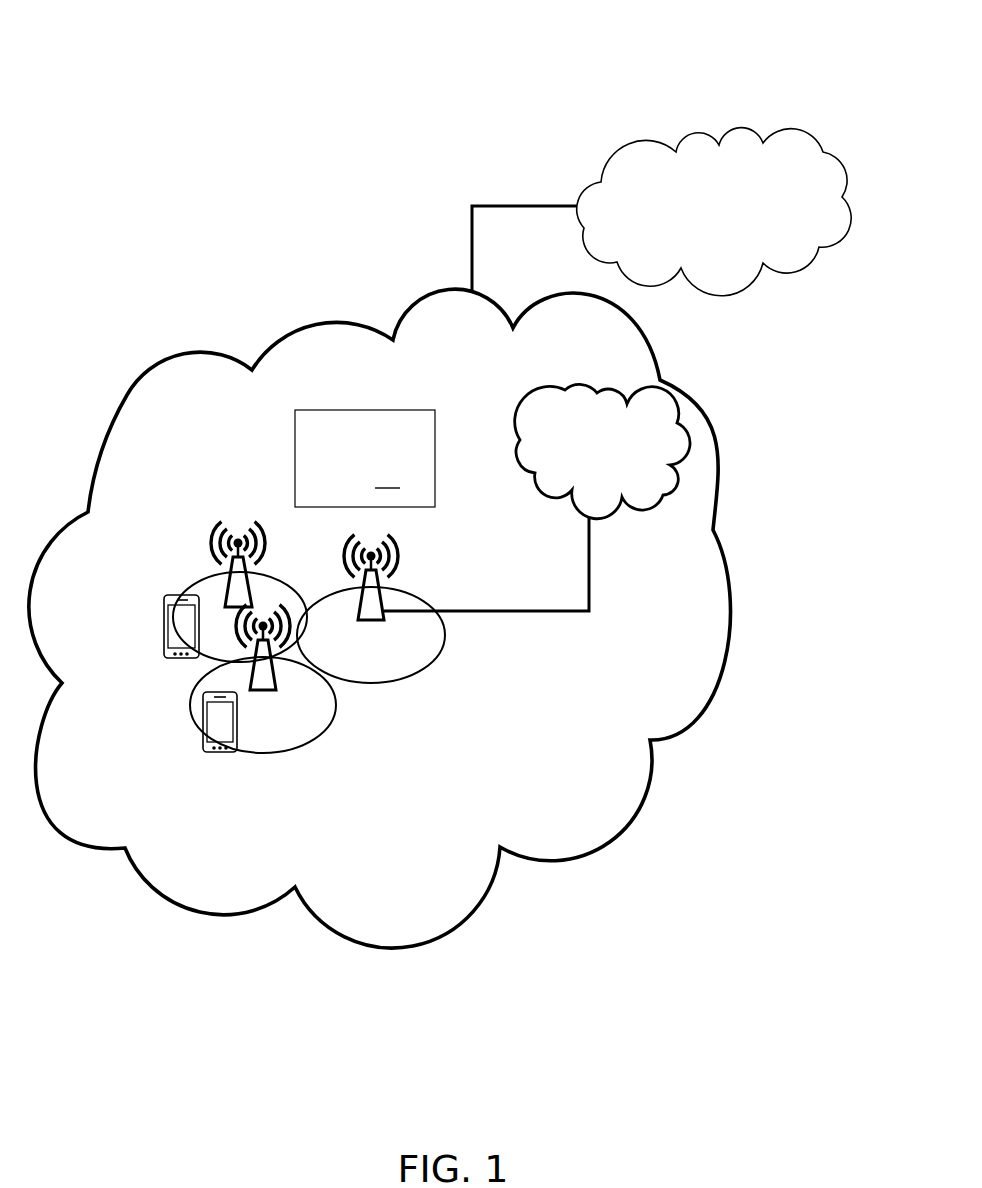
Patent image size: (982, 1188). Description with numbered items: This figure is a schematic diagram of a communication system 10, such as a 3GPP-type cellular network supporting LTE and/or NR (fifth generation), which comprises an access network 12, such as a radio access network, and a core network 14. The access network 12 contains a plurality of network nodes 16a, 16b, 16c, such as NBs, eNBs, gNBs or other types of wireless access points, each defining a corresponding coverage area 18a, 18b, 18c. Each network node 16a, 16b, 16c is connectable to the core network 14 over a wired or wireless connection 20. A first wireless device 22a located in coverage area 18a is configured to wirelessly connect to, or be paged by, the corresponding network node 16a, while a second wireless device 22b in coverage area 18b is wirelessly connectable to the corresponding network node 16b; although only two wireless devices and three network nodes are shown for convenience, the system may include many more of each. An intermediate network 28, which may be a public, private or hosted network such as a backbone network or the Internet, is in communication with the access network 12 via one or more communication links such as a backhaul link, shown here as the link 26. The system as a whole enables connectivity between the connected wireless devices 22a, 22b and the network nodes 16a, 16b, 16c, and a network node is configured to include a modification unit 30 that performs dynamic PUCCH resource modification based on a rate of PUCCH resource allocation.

The communication system 10 is at (192, 51).
The access network 12 is at (457, 331).
The core network 14 is at (651, 458).
The network node 16a is at (211, 542).
The network node 16b is at (274, 688).
The network node 16c is at (398, 556).
The coverage area 18a is at (190, 591).
The coverage area 18b is at (337, 705).
The coverage area 18c is at (445, 637).
The connection 20 is at (589, 567).
The wireless device 22a is at (165, 658).
The wireless device 22b is at (203, 730).
The network connection 26 is at (487, 204).
The intermediate network 28 is at (746, 214).
The modification unit 30 is at (435, 507).